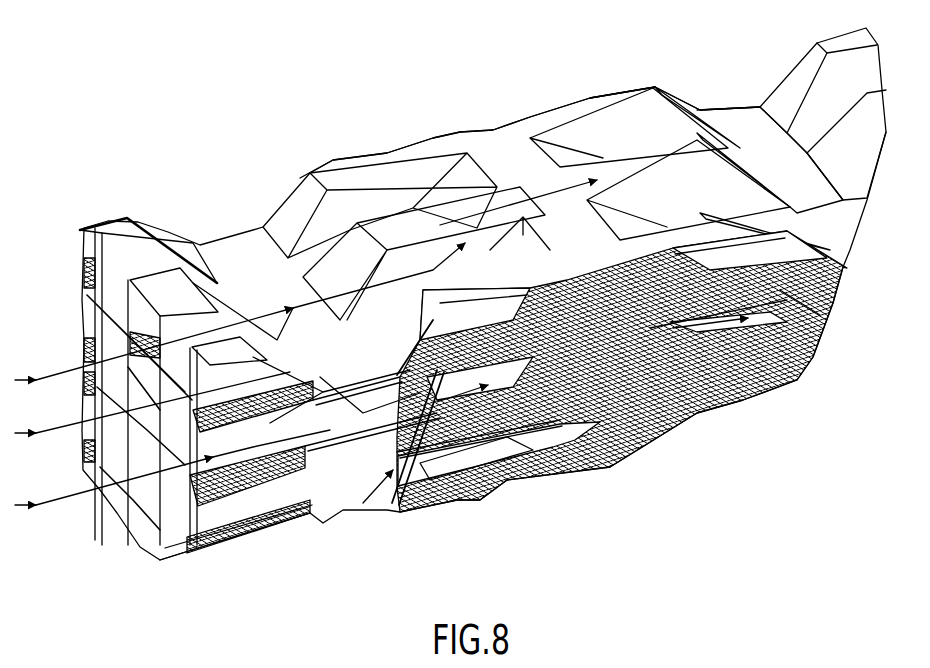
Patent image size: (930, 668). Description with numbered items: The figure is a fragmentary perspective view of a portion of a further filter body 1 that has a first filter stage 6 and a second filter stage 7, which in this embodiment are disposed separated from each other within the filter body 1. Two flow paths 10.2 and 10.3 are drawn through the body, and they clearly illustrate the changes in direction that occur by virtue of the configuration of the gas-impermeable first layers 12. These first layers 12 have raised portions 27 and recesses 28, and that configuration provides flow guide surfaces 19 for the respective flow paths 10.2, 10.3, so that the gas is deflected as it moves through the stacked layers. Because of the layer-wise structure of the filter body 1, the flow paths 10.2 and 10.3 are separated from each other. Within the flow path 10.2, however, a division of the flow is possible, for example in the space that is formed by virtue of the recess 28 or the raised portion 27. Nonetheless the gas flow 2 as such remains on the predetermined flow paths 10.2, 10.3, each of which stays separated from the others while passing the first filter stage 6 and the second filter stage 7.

The filter body 1 is at (278, 140).
The gas flow 2 is at (35, 380).
The first filter stage 6 is at (303, 538).
The second filter stage 7 is at (583, 467).
The flow path 10.2 is at (45, 378).
The flow path 10.3 is at (73, 493).
The gas-impermeable first layer 12 is at (590, 100).
The flow guide surface 19 is at (410, 257).
The raised portion 27 is at (490, 130).
The recess 28 is at (240, 253).